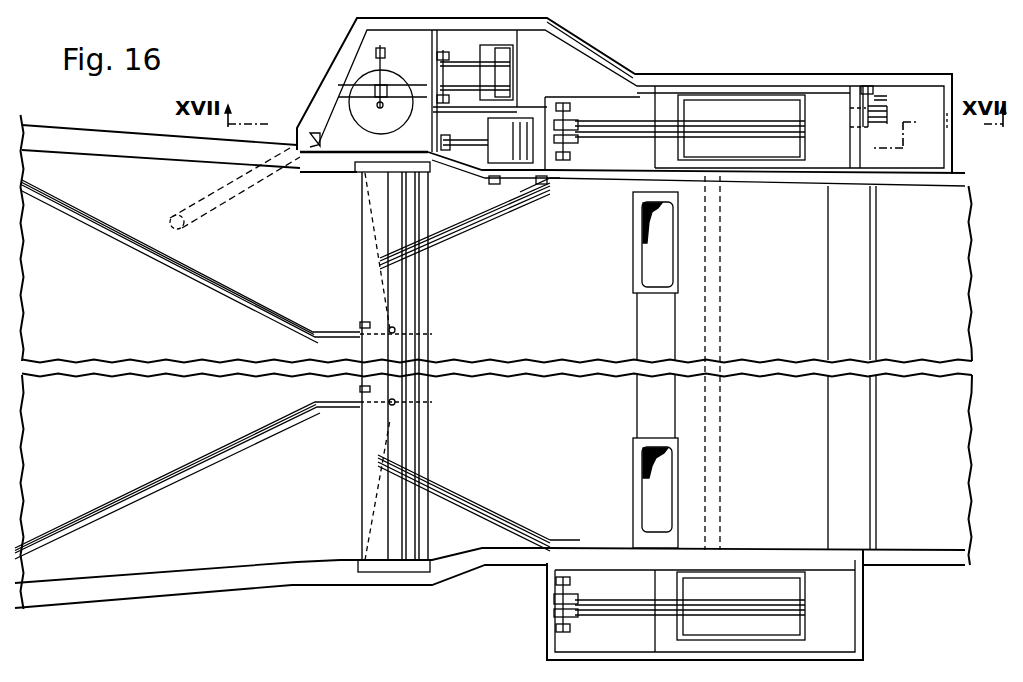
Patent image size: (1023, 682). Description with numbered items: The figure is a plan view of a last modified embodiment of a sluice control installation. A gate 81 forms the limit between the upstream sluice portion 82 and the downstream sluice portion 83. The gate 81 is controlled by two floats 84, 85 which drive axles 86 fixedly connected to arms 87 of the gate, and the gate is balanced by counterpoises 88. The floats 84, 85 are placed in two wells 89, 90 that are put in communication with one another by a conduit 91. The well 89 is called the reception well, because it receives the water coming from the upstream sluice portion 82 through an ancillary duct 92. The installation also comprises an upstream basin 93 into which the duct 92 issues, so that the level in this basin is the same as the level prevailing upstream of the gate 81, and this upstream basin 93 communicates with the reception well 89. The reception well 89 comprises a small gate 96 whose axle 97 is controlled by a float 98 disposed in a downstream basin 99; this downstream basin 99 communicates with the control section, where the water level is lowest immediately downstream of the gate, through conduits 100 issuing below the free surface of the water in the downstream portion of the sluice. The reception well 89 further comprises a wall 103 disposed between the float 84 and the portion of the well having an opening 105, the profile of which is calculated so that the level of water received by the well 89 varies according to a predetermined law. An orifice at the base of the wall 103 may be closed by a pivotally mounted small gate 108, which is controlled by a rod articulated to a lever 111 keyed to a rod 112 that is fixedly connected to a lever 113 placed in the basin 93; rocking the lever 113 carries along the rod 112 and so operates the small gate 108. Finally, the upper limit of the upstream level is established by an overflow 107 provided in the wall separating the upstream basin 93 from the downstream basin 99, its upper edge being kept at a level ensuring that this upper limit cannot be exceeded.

The gate 81 is at (368, 388).
The upstream sluice portion 82 is at (167, 448).
The downstream sluice portion 83 is at (946, 333).
The float 84 is at (730, 150).
The float 85 is at (748, 583).
The axle 86 is at (598, 146).
The arm 87 is at (471, 237).
The counterpoise 88 is at (653, 267).
The reception well 89 is at (815, 100).
The well 90 is at (836, 618).
The conduit 91 is at (716, 429).
The ancillary duct 92 is at (228, 198).
The upstream basin 93 is at (327, 115).
The small gate 96 is at (507, 68).
The axle 97 is at (445, 100).
The float 98 is at (485, 157).
The downstream basin 99 is at (518, 207).
The conduit 100 is at (492, 184).
The wall 103 is at (858, 147).
The opening 105 is at (955, 127).
The overflow 107 is at (432, 133).
The small gate 108 is at (861, 117).
The lever 111 is at (870, 100).
The rod 112 is at (641, 84).
The lever 113 is at (383, 80).